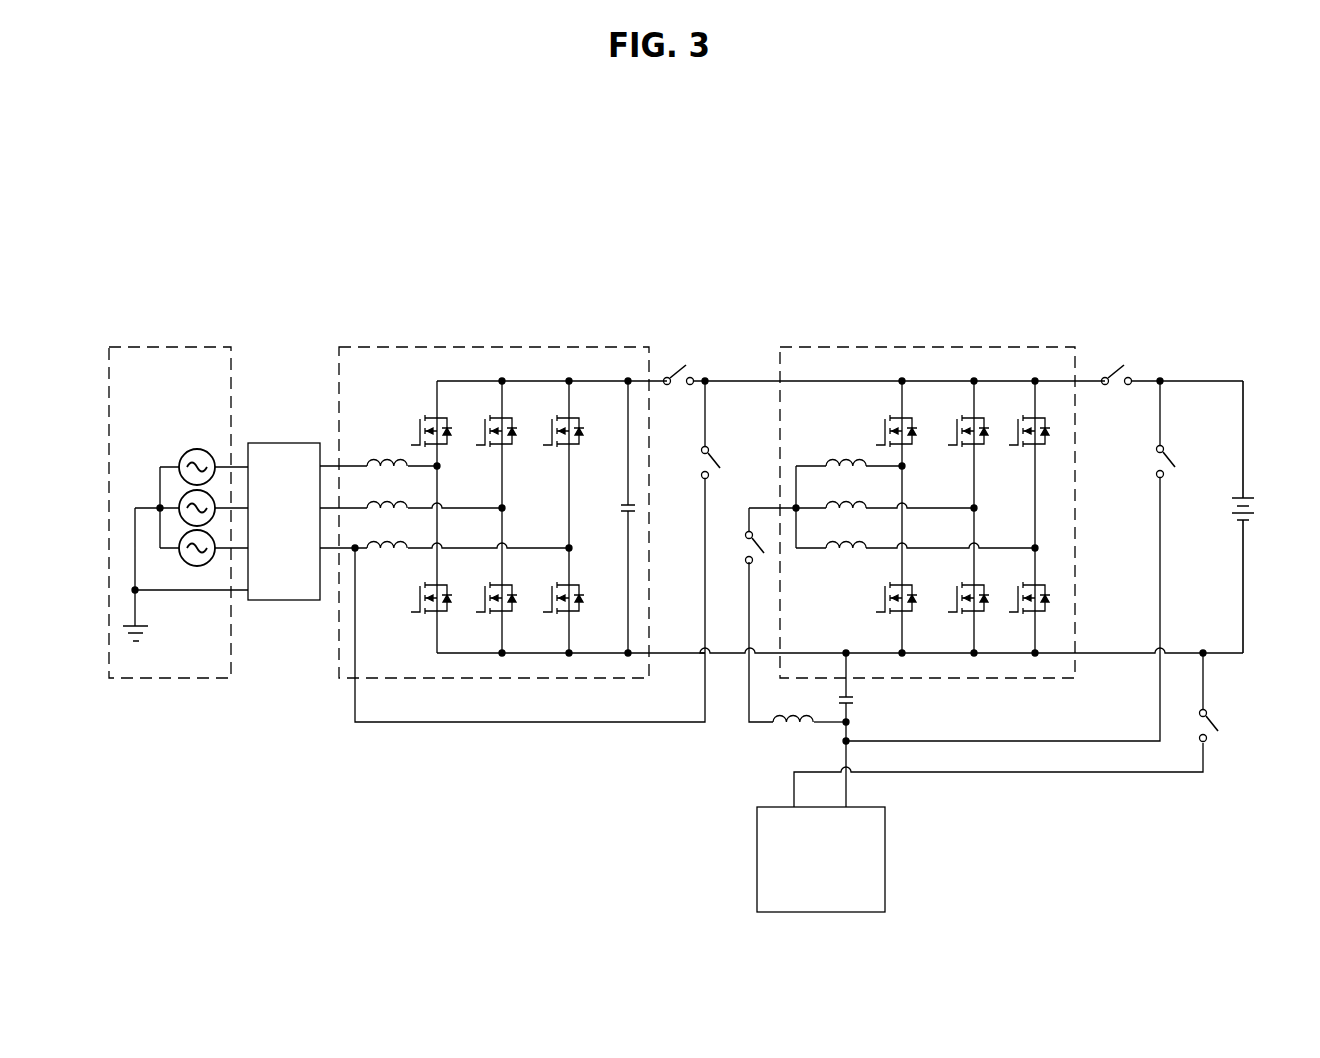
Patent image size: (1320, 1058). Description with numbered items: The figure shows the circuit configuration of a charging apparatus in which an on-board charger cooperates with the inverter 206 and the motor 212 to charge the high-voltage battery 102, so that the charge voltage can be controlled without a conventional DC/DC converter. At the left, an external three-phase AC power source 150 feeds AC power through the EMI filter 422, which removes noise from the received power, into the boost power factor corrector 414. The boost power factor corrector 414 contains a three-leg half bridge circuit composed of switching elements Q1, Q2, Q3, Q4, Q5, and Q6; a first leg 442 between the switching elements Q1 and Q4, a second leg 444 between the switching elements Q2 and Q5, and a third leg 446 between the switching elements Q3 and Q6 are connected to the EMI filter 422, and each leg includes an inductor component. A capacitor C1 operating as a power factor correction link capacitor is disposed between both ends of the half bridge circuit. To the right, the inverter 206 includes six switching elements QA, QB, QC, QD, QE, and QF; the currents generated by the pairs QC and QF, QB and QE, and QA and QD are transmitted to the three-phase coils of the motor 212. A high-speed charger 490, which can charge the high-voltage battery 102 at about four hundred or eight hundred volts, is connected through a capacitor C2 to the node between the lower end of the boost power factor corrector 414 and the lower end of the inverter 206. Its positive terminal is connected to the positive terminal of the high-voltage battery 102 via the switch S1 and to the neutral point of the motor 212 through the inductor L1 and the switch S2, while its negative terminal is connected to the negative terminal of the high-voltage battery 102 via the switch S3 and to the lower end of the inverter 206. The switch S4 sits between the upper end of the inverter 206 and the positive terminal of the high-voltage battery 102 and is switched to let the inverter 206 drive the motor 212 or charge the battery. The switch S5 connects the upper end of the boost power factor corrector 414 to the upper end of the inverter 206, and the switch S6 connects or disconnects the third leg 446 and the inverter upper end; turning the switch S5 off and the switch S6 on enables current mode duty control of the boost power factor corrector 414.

The AC power source 150 is at (188, 347).
The EMI filter 422 is at (280, 443).
The boost power factor corrector 414 is at (512, 484).
The first leg 442 is at (401, 468).
The second leg 444 is at (433, 509).
The third leg 446 is at (467, 550).
The motor 212 is at (953, 483).
The inverter 206 is at (953, 483).
The high-voltage battery 102 is at (1248, 497).
The high-speed charger 490 is at (757, 860).
The switch S1 is at (1152, 462).
The switch S2 is at (741, 548).
The switch S3 is at (1196, 726).
The switch S4 is at (1117, 388).
The switch S5 is at (679, 388).
The switch S6 is at (697, 463).
The capacitor C1 is at (616, 517).
The capacitor C2 is at (862, 697).
The inductor L1 is at (809, 733).
The switching element Q1 is at (439, 420).
The switching element Q2 is at (504, 420).
The switching element Q3 is at (571, 420).
The switching element Q4 is at (439, 610).
The switching element Q5 is at (504, 610).
The switching element Q6 is at (571, 610).
The switching element QA is at (1039, 420).
The switching element QB is at (977, 420).
The switching element QC is at (906, 420).
The switching element QD is at (1039, 610).
The switching element QE is at (977, 610).
The switching element QF is at (904, 610).